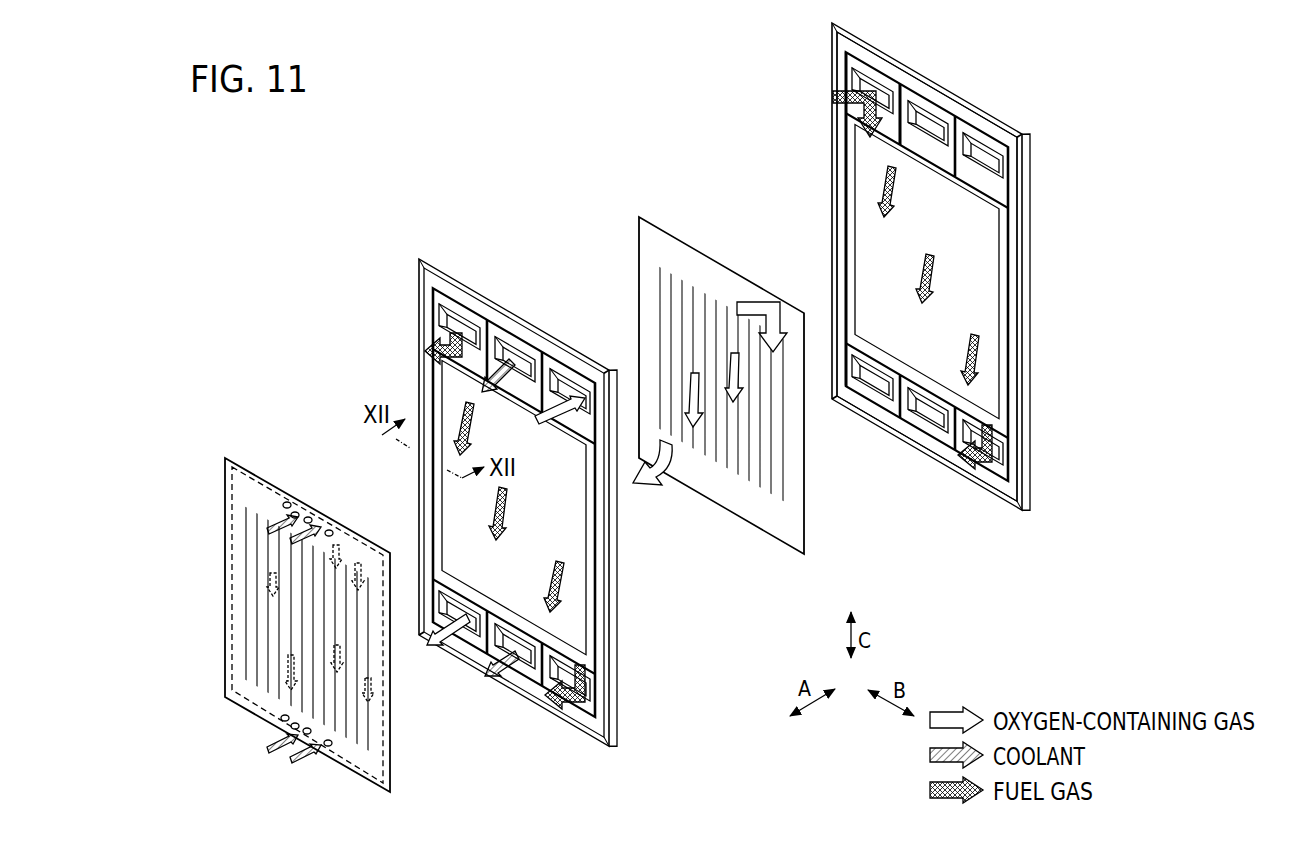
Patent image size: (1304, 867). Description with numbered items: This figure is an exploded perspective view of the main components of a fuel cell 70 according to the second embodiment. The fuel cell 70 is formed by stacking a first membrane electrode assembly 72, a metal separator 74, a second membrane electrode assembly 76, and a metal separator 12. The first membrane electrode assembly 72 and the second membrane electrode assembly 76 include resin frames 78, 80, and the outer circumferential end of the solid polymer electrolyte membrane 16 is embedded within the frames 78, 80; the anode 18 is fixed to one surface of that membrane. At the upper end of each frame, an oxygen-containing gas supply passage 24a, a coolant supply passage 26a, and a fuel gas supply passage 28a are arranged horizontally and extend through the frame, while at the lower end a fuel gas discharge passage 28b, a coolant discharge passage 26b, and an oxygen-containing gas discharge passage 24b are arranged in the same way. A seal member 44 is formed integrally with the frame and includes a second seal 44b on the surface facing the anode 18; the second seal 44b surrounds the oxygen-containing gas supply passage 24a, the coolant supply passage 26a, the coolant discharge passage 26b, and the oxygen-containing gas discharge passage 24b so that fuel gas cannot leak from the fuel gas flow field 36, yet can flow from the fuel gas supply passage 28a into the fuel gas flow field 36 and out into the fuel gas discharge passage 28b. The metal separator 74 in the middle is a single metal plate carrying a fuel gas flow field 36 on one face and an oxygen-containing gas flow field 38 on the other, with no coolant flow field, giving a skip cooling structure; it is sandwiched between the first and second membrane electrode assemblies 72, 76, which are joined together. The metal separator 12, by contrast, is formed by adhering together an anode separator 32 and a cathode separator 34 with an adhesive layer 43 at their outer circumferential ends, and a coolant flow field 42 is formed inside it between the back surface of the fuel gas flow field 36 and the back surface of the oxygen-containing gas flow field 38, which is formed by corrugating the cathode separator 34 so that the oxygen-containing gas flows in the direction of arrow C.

The fuel cell 70 is at (322, 209).
The metal separator 12 is at (222, 466).
The adhesive layer 43 is at (238, 462).
The coolant flow field 42 is at (345, 656).
The second membrane electrode assembly 76 is at (414, 281).
The resin frame 80 is at (614, 617).
The resin frame 78 is at (1027, 328).
The first membrane electrode assembly 72 is at (829, 40).
The solid polymer electrolyte membrane 16 is at (872, 188).
The anode 18 is at (865, 238).
The seal member 44 is at (416, 377).
The second seal 44b is at (924, 95).
The fuel gas supply passage 28a is at (463, 312).
The coolant supply passage 26a is at (528, 345).
The oxygen-containing gas supply passage 24a is at (574, 388).
The oxygen-containing gas discharge passage 24b is at (460, 606).
The coolant discharge passage 26b is at (513, 645).
The fuel gas discharge passage 28b is at (548, 673).
The fuel gas flow field 36 is at (508, 510).
The metal separator 74 is at (635, 243).
The cathode separator 34 is at (788, 522).
The anode separator 32 is at (790, 470).
The oxygen-containing gas flow field 38 is at (740, 378).